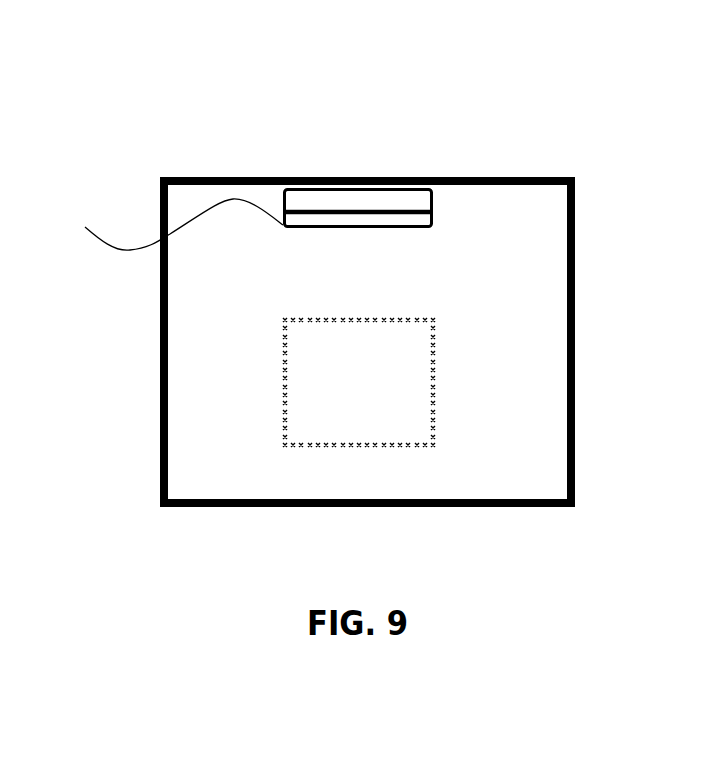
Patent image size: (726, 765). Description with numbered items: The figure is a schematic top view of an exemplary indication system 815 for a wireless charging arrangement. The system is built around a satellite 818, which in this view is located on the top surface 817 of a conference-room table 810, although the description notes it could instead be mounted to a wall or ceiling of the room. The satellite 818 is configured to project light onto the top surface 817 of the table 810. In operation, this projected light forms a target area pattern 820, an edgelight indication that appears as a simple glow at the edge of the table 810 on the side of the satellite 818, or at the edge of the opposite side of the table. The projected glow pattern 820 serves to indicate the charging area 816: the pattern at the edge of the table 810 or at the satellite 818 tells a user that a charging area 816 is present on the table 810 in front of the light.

The conference-room table 810 is at (242, 177).
The indication system 815 is at (462, 88).
The charging area 816 is at (433, 373).
The top surface 817 is at (555, 226).
The satellite 818 is at (433, 203).
The target area pattern 820 is at (160, 224).